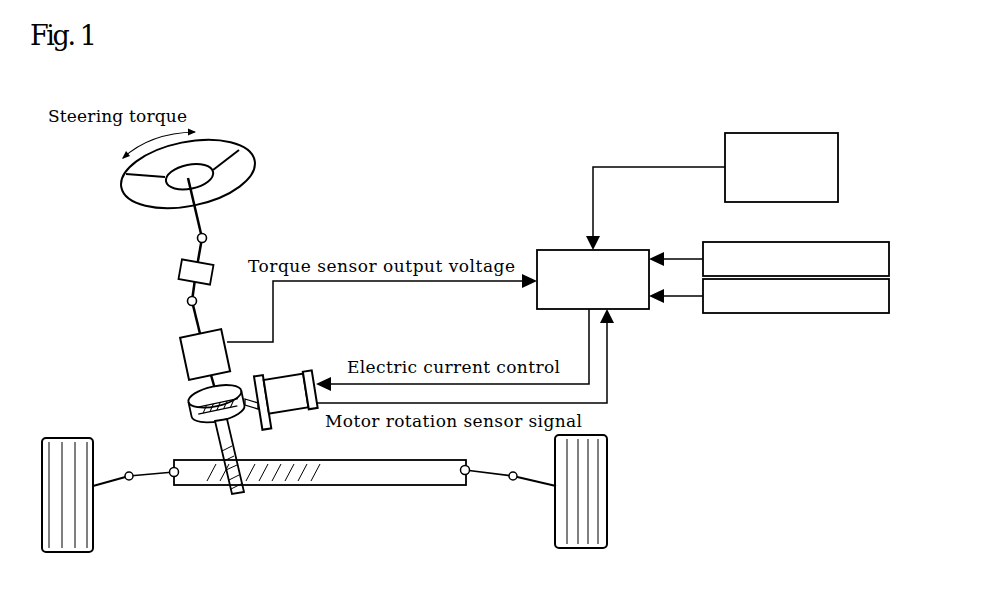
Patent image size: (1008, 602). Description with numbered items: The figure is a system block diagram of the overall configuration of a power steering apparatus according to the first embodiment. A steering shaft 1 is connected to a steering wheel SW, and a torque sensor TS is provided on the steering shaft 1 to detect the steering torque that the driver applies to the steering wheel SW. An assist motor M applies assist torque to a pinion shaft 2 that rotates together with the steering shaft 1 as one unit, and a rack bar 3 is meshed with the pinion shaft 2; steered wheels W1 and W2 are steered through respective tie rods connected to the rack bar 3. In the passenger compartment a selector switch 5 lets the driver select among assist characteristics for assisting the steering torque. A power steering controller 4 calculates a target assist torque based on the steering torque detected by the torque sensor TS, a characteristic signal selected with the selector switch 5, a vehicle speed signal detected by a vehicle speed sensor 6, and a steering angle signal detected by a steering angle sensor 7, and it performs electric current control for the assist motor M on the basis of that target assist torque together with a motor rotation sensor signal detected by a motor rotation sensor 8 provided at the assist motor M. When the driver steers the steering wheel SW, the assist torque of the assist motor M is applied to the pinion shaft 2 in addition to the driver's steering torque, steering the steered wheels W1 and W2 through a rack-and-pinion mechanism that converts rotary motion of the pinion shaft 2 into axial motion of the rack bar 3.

The steering shaft 1 is at (190, 315).
The torque sensor TS is at (183, 365).
The steering wheel SW is at (256, 165).
The assist motor M is at (288, 375).
The motor rotation sensor 8 is at (312, 374).
The pinion shaft 2 is at (243, 496).
The rack bar 3 is at (372, 486).
The power steering controller 4 is at (553, 250).
The selector switch 5 is at (725, 152).
The vehicle speed sensor 6 is at (787, 242).
The steering angle sensor 7 is at (787, 313).
The steered wheel W1 is at (62, 438).
The steered wheel W2 is at (607, 440).